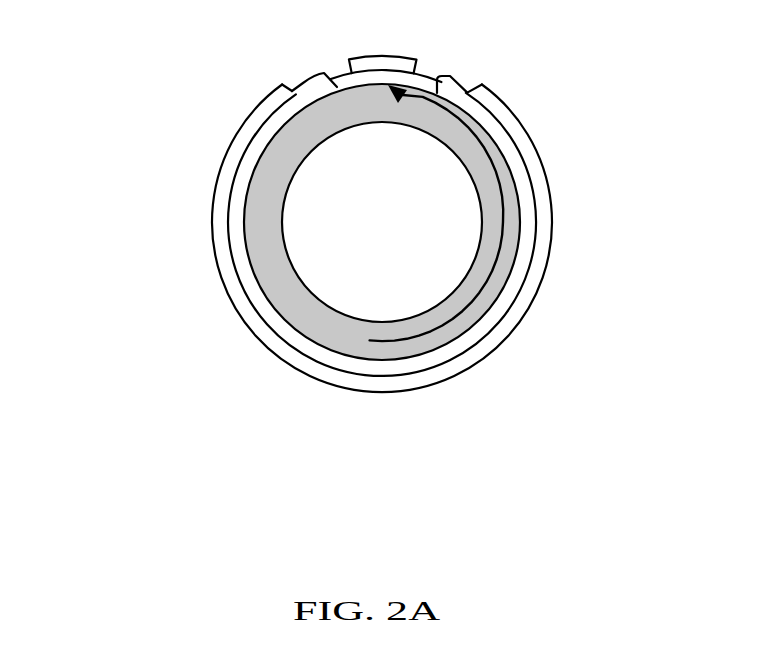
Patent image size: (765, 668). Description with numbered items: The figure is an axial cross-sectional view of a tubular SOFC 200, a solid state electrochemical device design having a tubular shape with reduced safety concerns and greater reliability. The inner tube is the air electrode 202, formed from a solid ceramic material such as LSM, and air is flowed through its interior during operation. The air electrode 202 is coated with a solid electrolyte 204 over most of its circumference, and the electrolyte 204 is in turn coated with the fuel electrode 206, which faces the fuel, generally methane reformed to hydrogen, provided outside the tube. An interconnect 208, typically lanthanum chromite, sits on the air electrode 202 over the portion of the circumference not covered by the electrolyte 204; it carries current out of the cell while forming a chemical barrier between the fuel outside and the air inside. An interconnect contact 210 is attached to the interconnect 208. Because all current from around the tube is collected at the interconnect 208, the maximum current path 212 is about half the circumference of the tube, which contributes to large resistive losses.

The tubular SOFC 200 is at (387, 228).
The air electrode 202 is at (295, 333).
The solid electrolyte 204 is at (288, 90).
The fuel electrode 206 is at (221, 281).
The interconnect 208 is at (440, 77).
The interconnect contact 210 is at (349, 59).
The maximum current path 212 is at (677, 132).